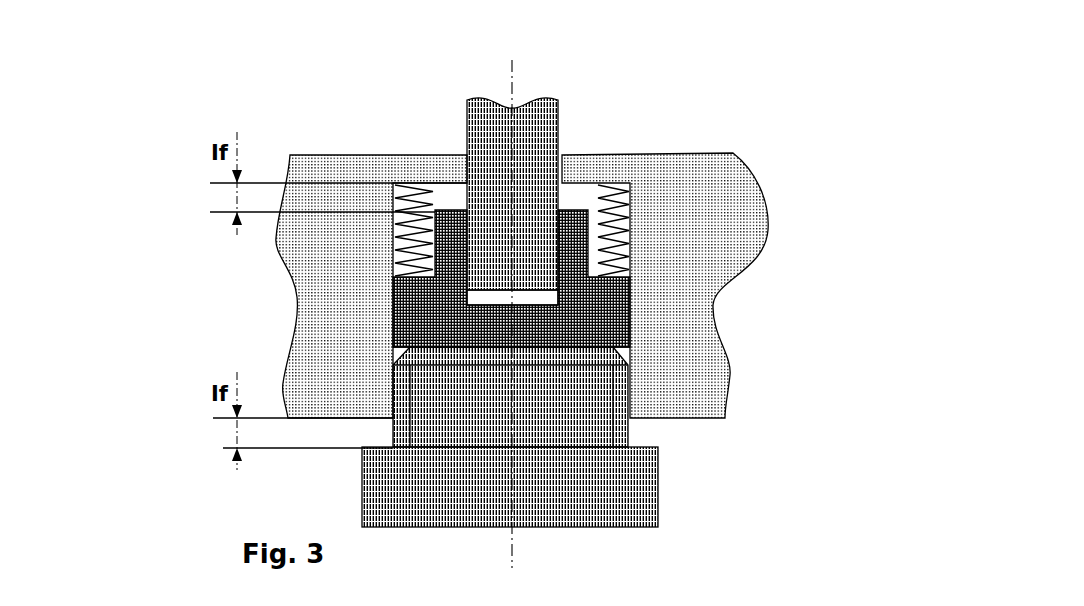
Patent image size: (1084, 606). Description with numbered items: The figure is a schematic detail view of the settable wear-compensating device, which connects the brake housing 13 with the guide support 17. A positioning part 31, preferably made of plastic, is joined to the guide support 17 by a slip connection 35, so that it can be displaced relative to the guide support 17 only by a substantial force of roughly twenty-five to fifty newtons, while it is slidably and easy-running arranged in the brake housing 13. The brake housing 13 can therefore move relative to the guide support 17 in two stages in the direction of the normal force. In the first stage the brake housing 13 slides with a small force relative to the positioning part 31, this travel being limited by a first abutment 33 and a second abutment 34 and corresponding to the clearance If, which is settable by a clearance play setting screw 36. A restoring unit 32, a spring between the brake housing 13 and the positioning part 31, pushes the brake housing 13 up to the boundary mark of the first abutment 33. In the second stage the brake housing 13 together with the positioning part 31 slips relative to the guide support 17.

The brake housing 13 is at (174, 212).
The guide support 17 is at (558, 108).
The positioning part 31 is at (535, 328).
The restoring unit 32 is at (648, 158).
The first abutment 33 is at (467, 350).
The second abutment 34 is at (452, 183).
The slip connection 35 is at (463, 240).
The clearance play setting screw 36 is at (623, 482).